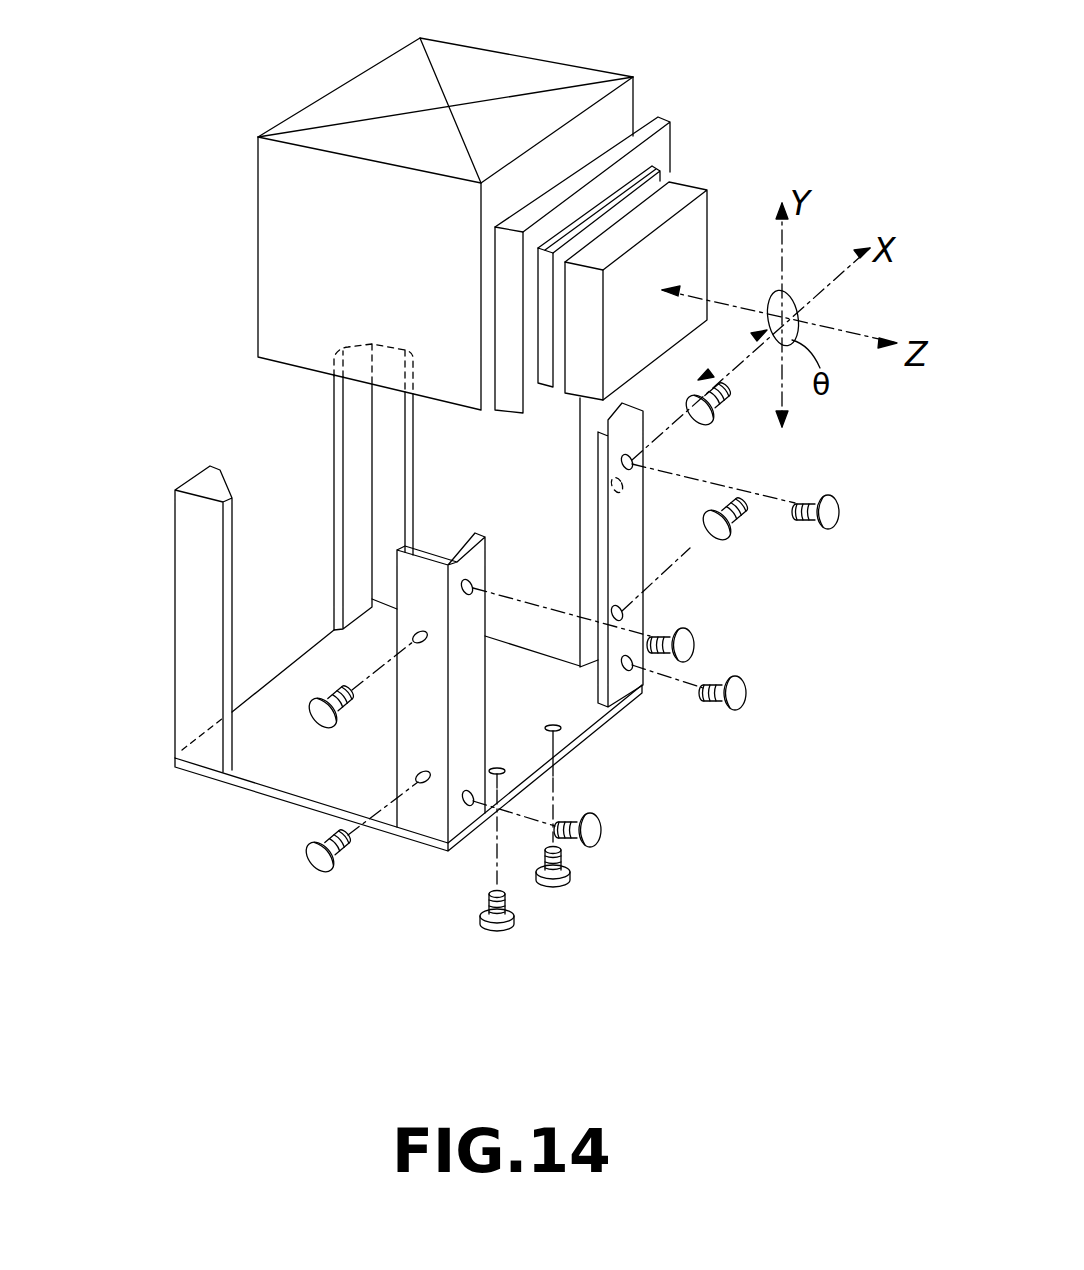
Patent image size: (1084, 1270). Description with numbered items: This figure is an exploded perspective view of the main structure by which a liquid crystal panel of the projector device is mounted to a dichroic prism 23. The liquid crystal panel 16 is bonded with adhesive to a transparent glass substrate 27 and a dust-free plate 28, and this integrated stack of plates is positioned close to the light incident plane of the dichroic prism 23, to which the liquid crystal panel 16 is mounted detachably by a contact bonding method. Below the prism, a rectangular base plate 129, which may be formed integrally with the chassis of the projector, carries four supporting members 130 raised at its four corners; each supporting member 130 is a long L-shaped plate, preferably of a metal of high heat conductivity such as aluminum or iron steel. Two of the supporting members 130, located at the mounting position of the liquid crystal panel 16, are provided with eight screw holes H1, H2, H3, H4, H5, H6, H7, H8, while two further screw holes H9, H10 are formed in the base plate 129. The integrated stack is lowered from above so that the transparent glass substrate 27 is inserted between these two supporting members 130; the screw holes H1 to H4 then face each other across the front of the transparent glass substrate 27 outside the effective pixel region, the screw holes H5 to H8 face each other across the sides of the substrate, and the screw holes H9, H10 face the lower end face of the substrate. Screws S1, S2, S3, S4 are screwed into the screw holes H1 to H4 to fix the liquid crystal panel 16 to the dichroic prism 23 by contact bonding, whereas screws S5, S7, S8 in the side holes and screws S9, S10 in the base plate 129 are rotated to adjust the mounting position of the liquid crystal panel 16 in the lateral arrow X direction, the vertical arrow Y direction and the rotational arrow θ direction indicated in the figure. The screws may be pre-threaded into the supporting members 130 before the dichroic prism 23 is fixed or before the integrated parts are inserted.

The dichroic prism 23 is at (343, 102).
The transparent glass substrate 27 is at (652, 118).
The liquid crystal panel 16 is at (655, 168).
The dust-free plate 28 is at (690, 222).
The supporting member 130 is at (350, 432).
The base plate 129 is at (318, 670).
The screw hole H1 is at (470, 580).
The screw hole H2 is at (468, 806).
The screw hole H3 is at (605, 456).
The screw hole H4 is at (630, 672).
The screw hole H5 is at (421, 630).
The screw hole H6 is at (423, 785).
The screw hole H7 is at (608, 505).
The screw hole H8 is at (612, 610).
The screw hole H9 is at (498, 765).
The screw hole H10 is at (560, 733).
The screw S1 is at (697, 643).
The screw S2 is at (602, 850).
The screw S3 is at (842, 502).
The screw S4 is at (748, 687).
The screw S5 is at (315, 728).
The screw S7 is at (737, 413).
The screw S8 is at (735, 533).
The screw S9 is at (320, 872).
The screw S10 is at (560, 885).